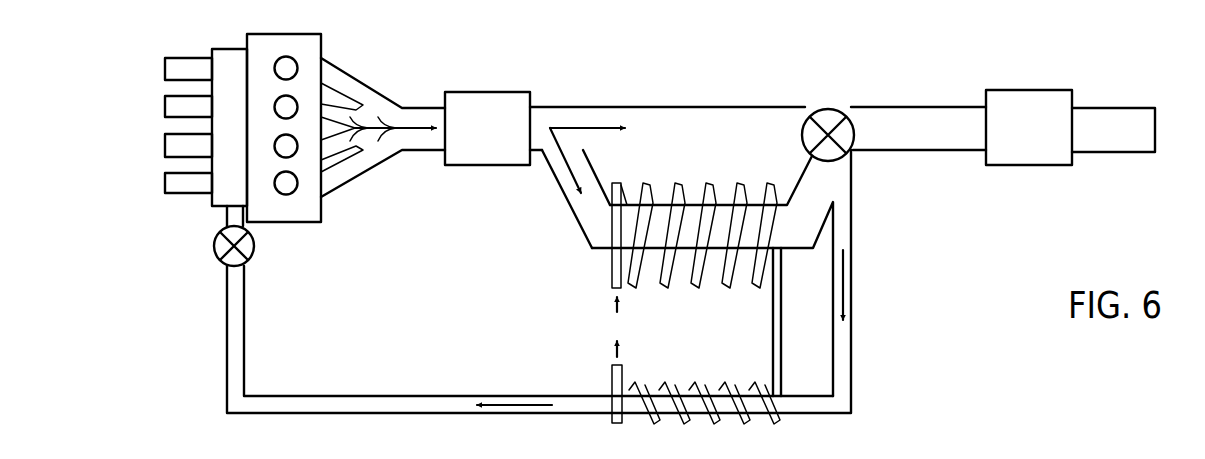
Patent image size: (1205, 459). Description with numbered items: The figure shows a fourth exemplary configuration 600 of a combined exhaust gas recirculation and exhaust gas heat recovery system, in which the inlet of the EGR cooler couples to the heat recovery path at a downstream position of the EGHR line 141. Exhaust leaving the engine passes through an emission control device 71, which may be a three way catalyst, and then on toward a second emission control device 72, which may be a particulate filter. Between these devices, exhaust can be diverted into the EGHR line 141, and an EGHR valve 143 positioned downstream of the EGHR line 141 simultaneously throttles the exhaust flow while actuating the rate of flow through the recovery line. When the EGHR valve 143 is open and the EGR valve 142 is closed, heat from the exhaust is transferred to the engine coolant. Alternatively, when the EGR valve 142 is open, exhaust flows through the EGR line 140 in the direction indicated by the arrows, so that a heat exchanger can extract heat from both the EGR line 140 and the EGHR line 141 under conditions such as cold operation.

The fourth exemplary configuration 600 is at (146, 312).
The emission control device 71 is at (498, 137).
The emission control device 72 is at (1039, 137).
The EGR line 140 is at (852, 365).
The EGHR line 141 is at (568, 203).
The EGR valve 142 is at (216, 236).
The EGHR valve 143 is at (852, 110).